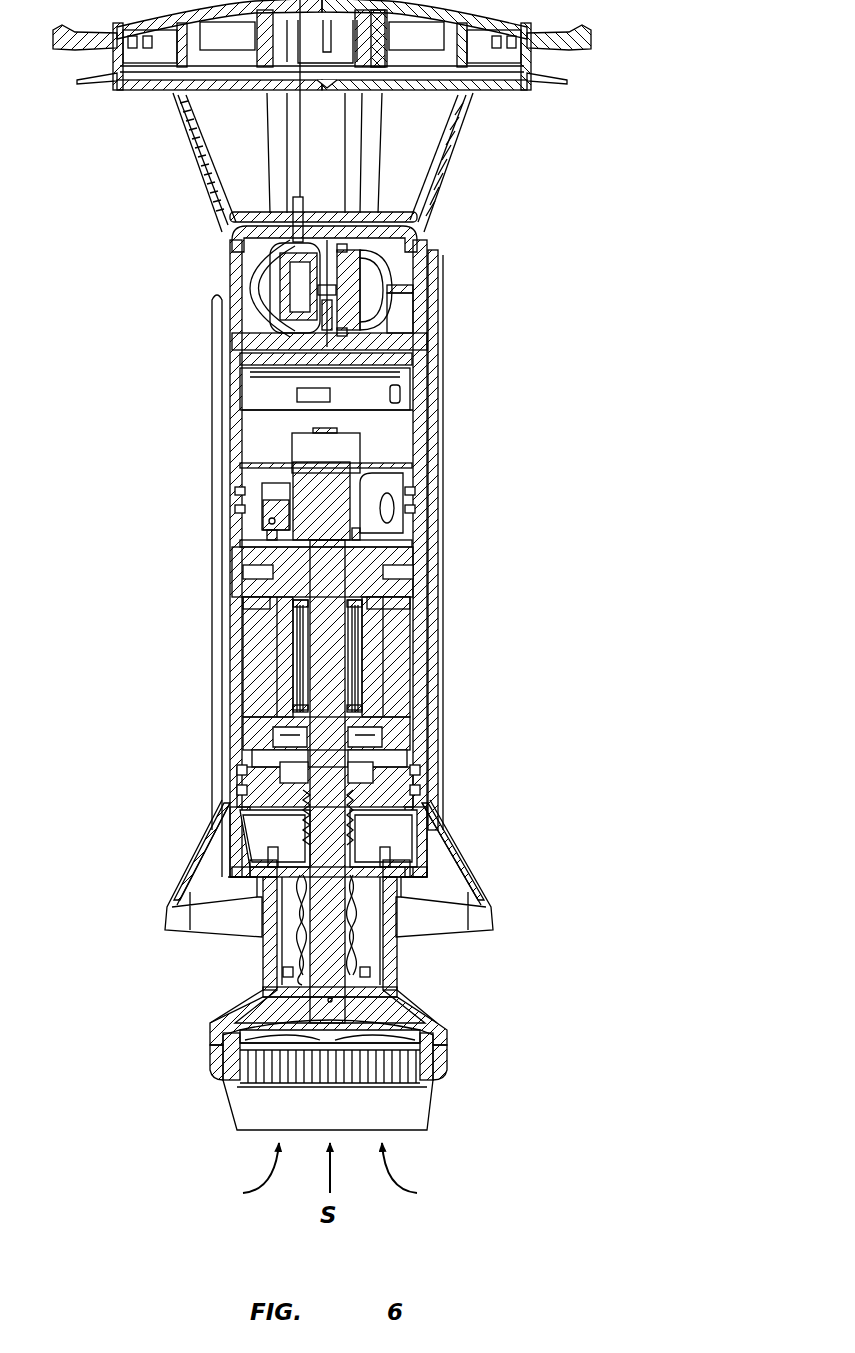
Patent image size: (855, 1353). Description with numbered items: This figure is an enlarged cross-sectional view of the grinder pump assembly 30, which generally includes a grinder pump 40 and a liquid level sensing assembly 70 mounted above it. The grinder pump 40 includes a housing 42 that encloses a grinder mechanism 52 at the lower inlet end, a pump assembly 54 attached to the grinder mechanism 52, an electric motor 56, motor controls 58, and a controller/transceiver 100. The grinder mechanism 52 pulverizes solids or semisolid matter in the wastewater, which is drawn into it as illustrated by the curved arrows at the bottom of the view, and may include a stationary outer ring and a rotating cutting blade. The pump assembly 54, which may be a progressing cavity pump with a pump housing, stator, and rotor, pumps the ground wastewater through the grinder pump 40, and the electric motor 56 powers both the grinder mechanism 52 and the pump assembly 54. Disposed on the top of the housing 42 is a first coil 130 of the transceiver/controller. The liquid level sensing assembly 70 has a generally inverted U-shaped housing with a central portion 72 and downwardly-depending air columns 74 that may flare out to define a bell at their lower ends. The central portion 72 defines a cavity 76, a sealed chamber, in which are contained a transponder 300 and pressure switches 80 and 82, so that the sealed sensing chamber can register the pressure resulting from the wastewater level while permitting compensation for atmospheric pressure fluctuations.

The grinder pump assembly 30 is at (322, 121).
The grinder pump 40 is at (233, 965).
The housing 42 is at (236, 660).
The grinder mechanism 52 is at (433, 1020).
The pump assembly 54 is at (330, 925).
The electric motor 56 is at (400, 652).
The motor controls 58 is at (395, 483).
The liquid level sensing assembly 70 is at (448, 568).
The central portion 72 is at (432, 290).
The air columns 74 is at (185, 873).
The cavity 76 is at (400, 318).
The switch 80 is at (385, 265).
The switch 82 is at (270, 290).
The controller/transceiver 100 is at (395, 433).
The first coil 130 is at (280, 362).
The transponder 300 is at (300, 330).